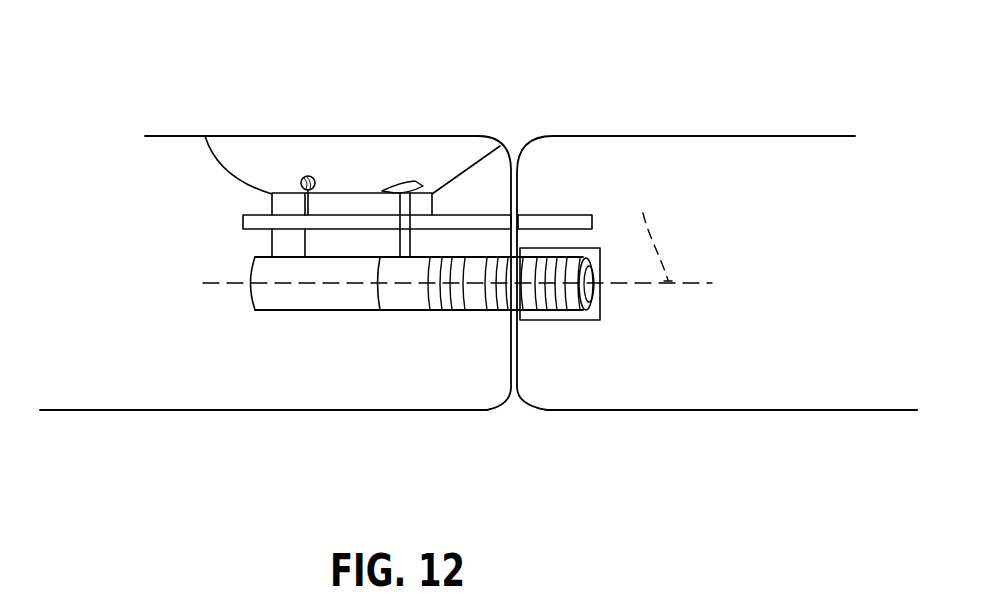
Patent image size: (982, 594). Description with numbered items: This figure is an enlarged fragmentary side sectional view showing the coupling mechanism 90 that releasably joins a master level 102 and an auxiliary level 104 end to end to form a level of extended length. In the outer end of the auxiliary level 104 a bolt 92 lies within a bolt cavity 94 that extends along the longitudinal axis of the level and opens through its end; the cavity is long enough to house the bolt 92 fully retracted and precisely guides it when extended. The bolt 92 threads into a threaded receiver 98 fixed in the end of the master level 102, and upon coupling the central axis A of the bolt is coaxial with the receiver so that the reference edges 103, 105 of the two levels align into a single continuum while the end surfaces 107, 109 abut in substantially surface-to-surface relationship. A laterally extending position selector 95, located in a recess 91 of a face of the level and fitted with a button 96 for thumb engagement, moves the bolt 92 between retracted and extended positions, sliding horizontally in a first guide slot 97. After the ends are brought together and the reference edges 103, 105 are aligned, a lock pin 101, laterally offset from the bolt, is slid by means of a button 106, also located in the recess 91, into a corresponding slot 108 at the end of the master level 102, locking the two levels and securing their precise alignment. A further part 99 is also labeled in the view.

The coupling mechanism 90 is at (384, 66).
The recess 91 is at (229, 165).
The bolt 92 is at (395, 300).
The bolt cavity 94 is at (263, 300).
The position selector 95 is at (409, 207).
The button 96 is at (416, 181).
The first guide slot 97 is at (243, 218).
The threaded receiver 98 is at (587, 318).
The block 99 is at (285, 203).
The lock pin 101 is at (275, 223).
The master level 102 is at (670, 392).
The reference edge 103 is at (830, 410).
The auxiliary level 104 is at (427, 393).
The reference edge 105 is at (257, 409).
The button 106 is at (312, 197).
The end surface 107 is at (511, 345).
The slot 108 is at (577, 213).
The end surface 109 is at (518, 343).
The central axis A is at (654, 236).